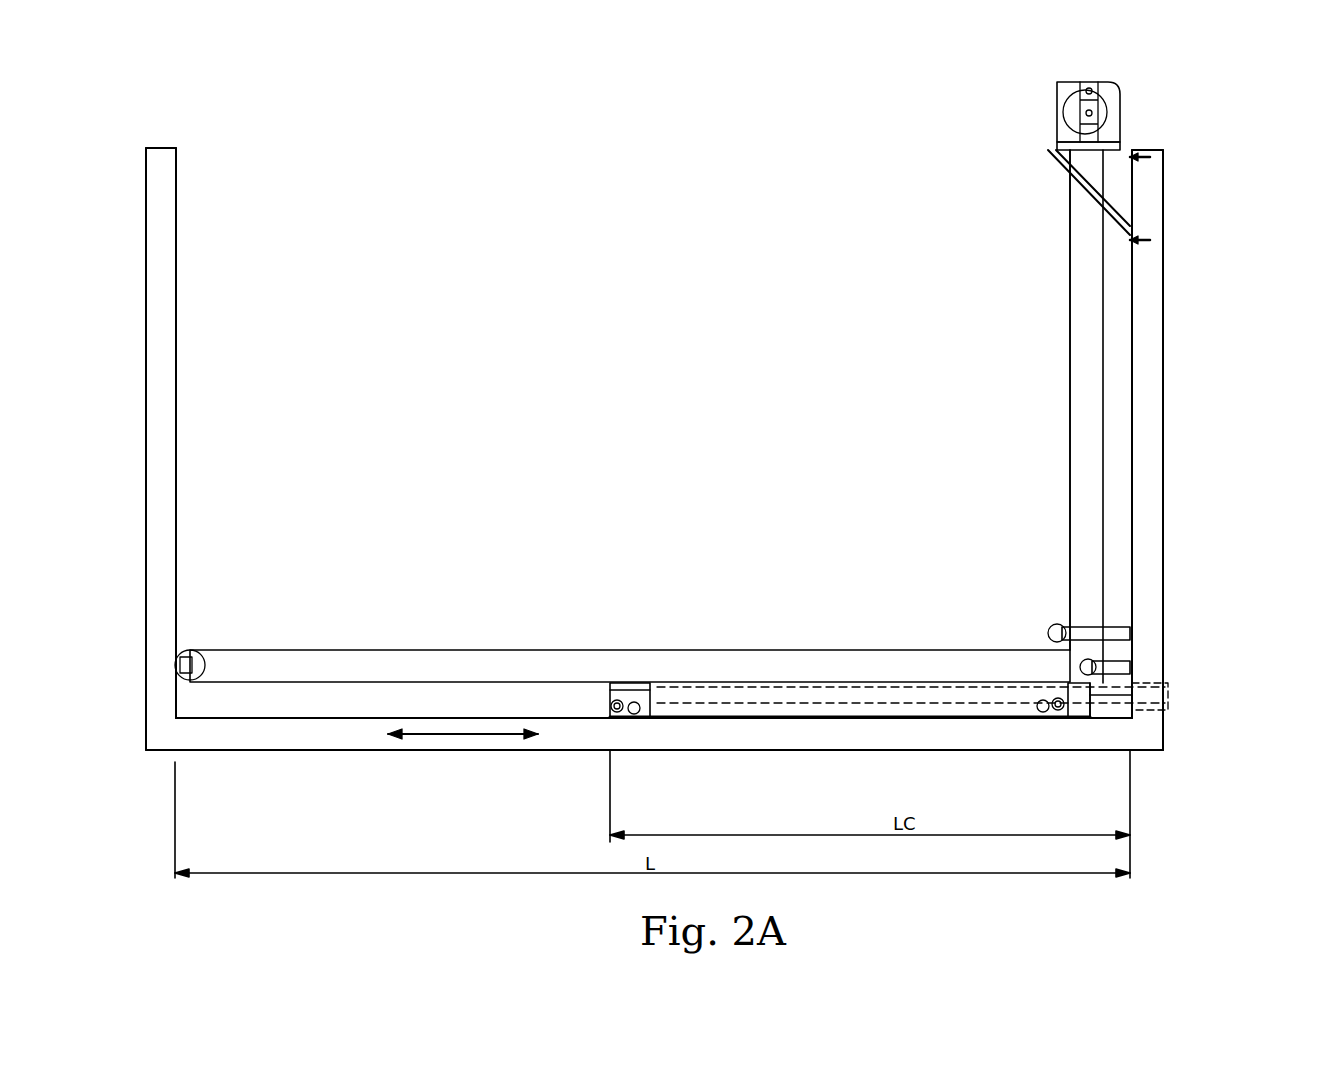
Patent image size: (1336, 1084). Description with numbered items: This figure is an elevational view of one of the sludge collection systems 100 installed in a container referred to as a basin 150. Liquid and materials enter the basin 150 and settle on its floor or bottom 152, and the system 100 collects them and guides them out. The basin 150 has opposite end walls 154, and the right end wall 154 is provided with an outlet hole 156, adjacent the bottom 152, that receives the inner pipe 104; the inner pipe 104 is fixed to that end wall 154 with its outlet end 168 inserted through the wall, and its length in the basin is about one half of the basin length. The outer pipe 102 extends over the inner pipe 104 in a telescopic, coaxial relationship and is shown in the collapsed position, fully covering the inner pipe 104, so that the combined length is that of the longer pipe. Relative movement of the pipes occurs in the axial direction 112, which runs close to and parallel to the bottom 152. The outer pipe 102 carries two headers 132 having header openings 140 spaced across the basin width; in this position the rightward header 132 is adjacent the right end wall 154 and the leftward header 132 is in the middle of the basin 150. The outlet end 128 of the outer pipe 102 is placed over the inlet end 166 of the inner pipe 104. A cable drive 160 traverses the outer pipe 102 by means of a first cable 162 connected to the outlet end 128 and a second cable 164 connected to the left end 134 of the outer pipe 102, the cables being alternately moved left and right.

The system 100 is at (898, 255).
The outer pipe 102 is at (640, 683).
The inner pipe 104 is at (1150, 690).
The axial direction 112 is at (473, 734).
The outlet end 128 is at (1100, 705).
The header 132 is at (615, 700).
The left end 134 is at (610, 700).
The header opening 140 is at (660, 717).
The basin 150 is at (177, 237).
The bottom 152 is at (268, 718).
The end wall 154 is at (177, 319).
The outlet hole 156 is at (1160, 708).
The cable drive 160 is at (887, 636).
The first cable 162 is at (1135, 650).
The second cable 164 is at (438, 650).
The inlet end 166 is at (680, 690).
The outlet end 168 is at (1165, 700).